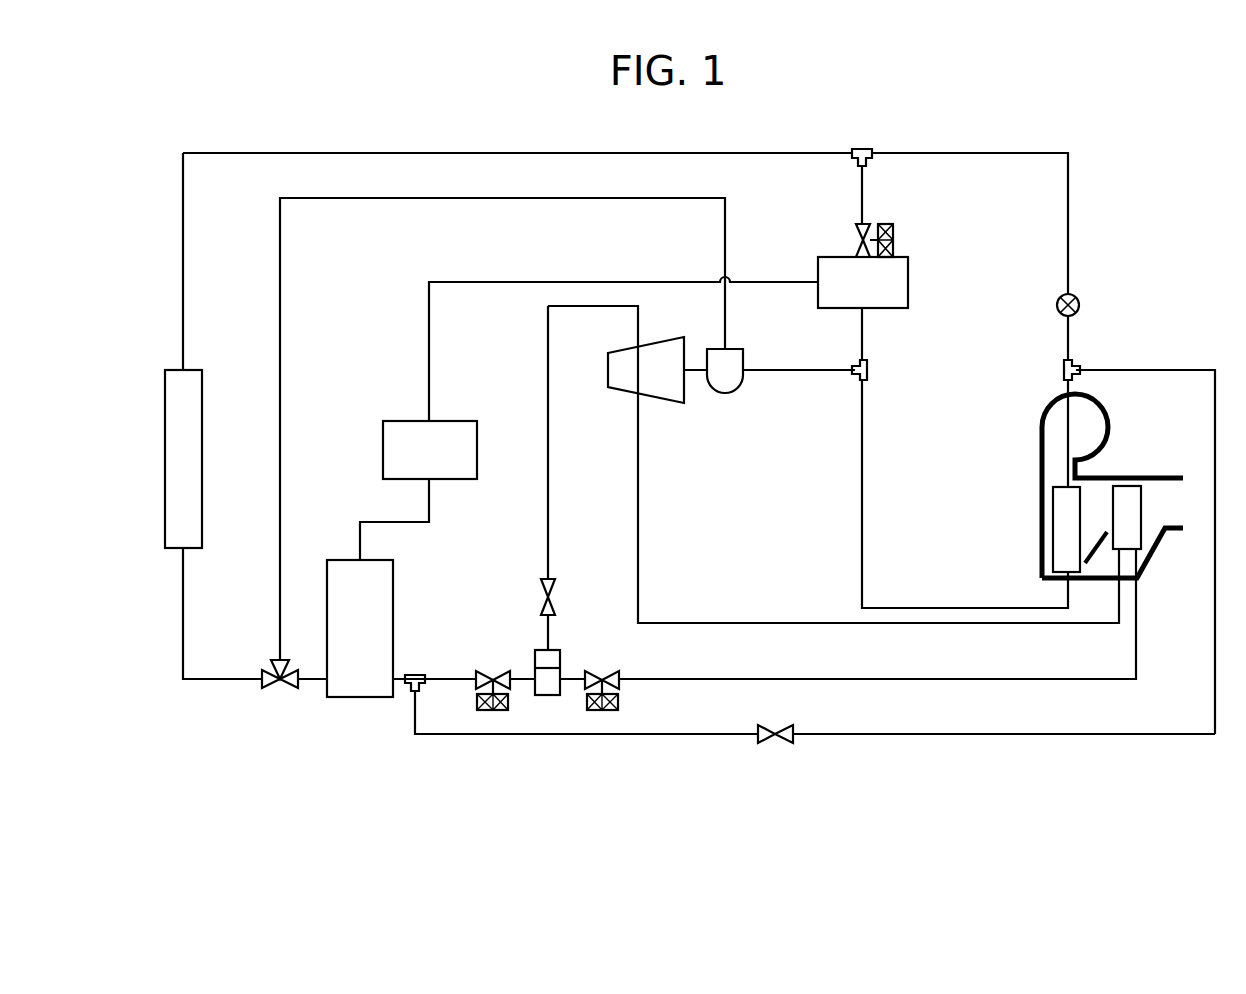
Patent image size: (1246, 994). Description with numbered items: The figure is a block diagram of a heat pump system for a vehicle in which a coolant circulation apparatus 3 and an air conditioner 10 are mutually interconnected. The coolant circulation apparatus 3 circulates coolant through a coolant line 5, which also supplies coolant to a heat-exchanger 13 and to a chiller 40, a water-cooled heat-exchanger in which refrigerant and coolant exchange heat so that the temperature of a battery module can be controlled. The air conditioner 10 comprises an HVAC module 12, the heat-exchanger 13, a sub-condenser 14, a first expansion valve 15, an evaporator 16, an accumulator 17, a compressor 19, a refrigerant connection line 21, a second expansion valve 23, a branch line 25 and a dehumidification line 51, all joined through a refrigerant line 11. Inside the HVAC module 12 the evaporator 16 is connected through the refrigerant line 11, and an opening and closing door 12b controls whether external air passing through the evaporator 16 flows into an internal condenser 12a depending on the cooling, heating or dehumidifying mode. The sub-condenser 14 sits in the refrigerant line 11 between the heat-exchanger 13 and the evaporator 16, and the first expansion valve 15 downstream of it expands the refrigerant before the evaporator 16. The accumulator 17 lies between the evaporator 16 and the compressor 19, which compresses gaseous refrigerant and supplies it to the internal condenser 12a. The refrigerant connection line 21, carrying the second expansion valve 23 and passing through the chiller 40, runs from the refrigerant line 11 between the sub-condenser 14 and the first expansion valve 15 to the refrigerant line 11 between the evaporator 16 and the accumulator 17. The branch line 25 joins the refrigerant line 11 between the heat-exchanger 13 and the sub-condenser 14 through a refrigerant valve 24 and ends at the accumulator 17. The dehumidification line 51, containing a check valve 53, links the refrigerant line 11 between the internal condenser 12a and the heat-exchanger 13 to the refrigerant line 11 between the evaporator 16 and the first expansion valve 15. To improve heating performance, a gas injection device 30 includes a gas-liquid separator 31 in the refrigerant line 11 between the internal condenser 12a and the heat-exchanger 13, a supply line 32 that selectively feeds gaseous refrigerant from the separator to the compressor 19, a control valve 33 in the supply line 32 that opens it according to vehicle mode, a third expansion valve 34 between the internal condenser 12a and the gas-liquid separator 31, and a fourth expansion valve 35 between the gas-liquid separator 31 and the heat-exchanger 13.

The air conditioner 10 is at (1082, 171).
The refrigerant line 11 is at (517, 153).
The HVAC module 12 is at (1041, 410).
The internal condenser 12a is at (1141, 501).
The opening and closing door 12b is at (1098, 568).
The heat-exchanger 13 is at (393, 627).
The sub-condenser 14 is at (165, 461).
The first expansion valve 15 is at (1079, 305).
The evaporator 16 is at (1053, 531).
The accumulator 17 is at (730, 349).
The compressor 19 is at (608, 373).
The refrigerant connection line 21 is at (863, 185).
The second expansion valve 23 is at (895, 240).
The refrigerant valve 24 is at (276, 690).
The branch line 25 is at (280, 352).
The coolant circulation apparatus 3 is at (383, 453).
The coolant line 5 is at (522, 282).
The gas injection device 30 is at (615, 776).
The gas-liquid separator 31 is at (540, 697).
The supply line 32 is at (548, 553).
The control valve 33 is at (562, 583).
The third expansion valve 34 is at (603, 712).
The fourth expansion valve 35 is at (493, 712).
The chiller 40 is at (908, 282).
The dehumidification line 51 is at (967, 737).
The check valve 53 is at (771, 745).